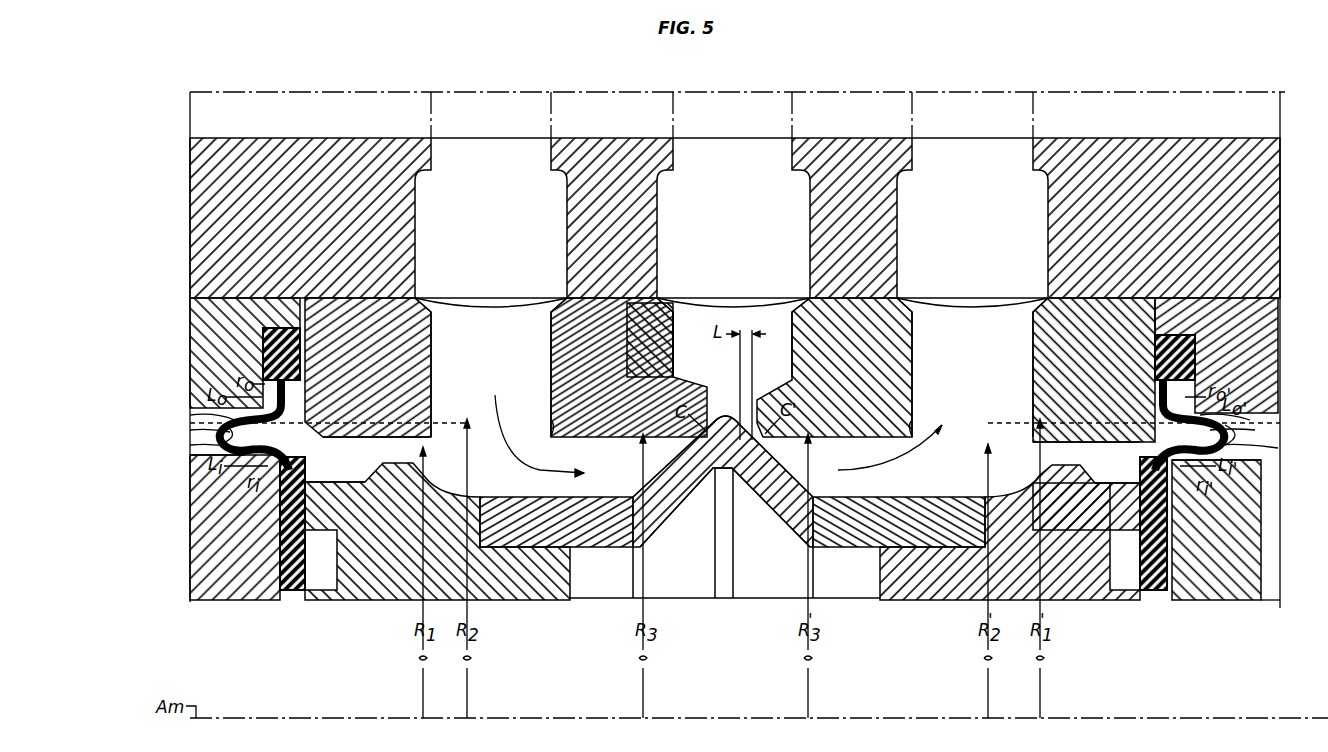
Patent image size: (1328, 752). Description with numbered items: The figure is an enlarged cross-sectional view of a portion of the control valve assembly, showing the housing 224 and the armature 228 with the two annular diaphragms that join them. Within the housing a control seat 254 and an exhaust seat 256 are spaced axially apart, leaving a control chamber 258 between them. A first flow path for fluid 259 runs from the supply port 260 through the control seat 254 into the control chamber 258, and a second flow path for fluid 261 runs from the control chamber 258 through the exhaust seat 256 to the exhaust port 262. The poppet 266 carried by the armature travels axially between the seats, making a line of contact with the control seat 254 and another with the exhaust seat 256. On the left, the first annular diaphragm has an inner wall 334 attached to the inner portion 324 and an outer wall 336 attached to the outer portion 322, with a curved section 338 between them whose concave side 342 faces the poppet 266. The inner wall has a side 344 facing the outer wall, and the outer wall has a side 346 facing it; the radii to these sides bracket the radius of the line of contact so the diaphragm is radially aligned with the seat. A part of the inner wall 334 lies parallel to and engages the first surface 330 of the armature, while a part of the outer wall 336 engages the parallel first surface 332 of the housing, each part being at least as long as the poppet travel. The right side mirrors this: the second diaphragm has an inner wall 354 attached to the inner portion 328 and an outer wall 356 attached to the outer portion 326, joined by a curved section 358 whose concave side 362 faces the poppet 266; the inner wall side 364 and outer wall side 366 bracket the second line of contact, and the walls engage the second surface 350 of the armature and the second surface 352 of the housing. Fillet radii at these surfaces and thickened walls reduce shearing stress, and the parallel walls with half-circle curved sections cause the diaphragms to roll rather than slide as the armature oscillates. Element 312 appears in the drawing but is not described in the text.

The housing 224 is at (1284, 310).
The armature 228 is at (918, 602).
The control seat 254 is at (588, 413).
The exhaust seat 256 is at (853, 423).
The control chamber 258 is at (722, 388).
The first flow path for fluid 259 is at (535, 439).
The supply port 260 is at (511, 360).
The second flow path for fluid 261 is at (892, 472).
The exhaust port 262 is at (989, 360).
The poppet 266 is at (702, 443).
The left insert body 312 is at (258, 350).
The outer portion of the diaphragm 322 is at (302, 341).
The inner portion of the diaphragm 324 is at (292, 575).
The outer portion of the diaphragm 326 is at (1172, 348).
The inner portion of the diaphragm 328 is at (1152, 575).
The first surface of the armature 330 is at (205, 455).
The first surface of the housing 332 is at (189, 410).
The inner wall 334 is at (195, 450).
The outer wall 336 is at (192, 415).
The curved section 338 is at (226, 435).
The concave side 342 is at (195, 432).
The side of the inner wall 344 is at (335, 472).
The side of the outer wall 346 is at (376, 451).
The second surface of the armature 350 is at (1245, 460).
The second surface of the housing 352 is at (1240, 413).
The inner wall 354 is at (1240, 447).
The outer wall 356 is at (1250, 418).
The curved section 358 is at (1232, 437).
The concave side 362 is at (1248, 427).
The side of the inner wall 364 is at (1138, 468).
The side of the outer wall 366 is at (1140, 455).